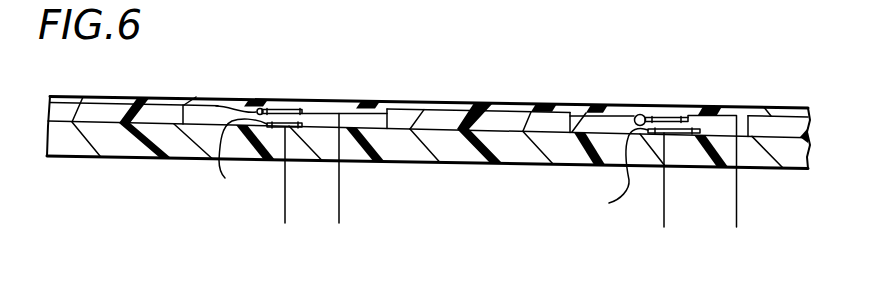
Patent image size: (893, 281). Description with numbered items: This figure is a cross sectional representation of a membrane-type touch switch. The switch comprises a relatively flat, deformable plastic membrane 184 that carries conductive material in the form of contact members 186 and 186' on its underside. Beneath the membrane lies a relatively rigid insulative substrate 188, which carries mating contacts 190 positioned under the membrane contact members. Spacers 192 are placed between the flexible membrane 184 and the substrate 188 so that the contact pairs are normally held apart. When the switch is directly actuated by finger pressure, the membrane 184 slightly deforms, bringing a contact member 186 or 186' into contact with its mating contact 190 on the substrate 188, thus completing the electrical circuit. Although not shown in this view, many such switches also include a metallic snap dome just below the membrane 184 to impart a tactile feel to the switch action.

The deformable plastic membrane 184 is at (565, 103).
The contact member 186 is at (301, 137).
The contact member 186' is at (686, 132).
The insulative substrate 188 is at (406, 164).
The mating contact 190 is at (421, 167).
The spacer 192 is at (218, 107).